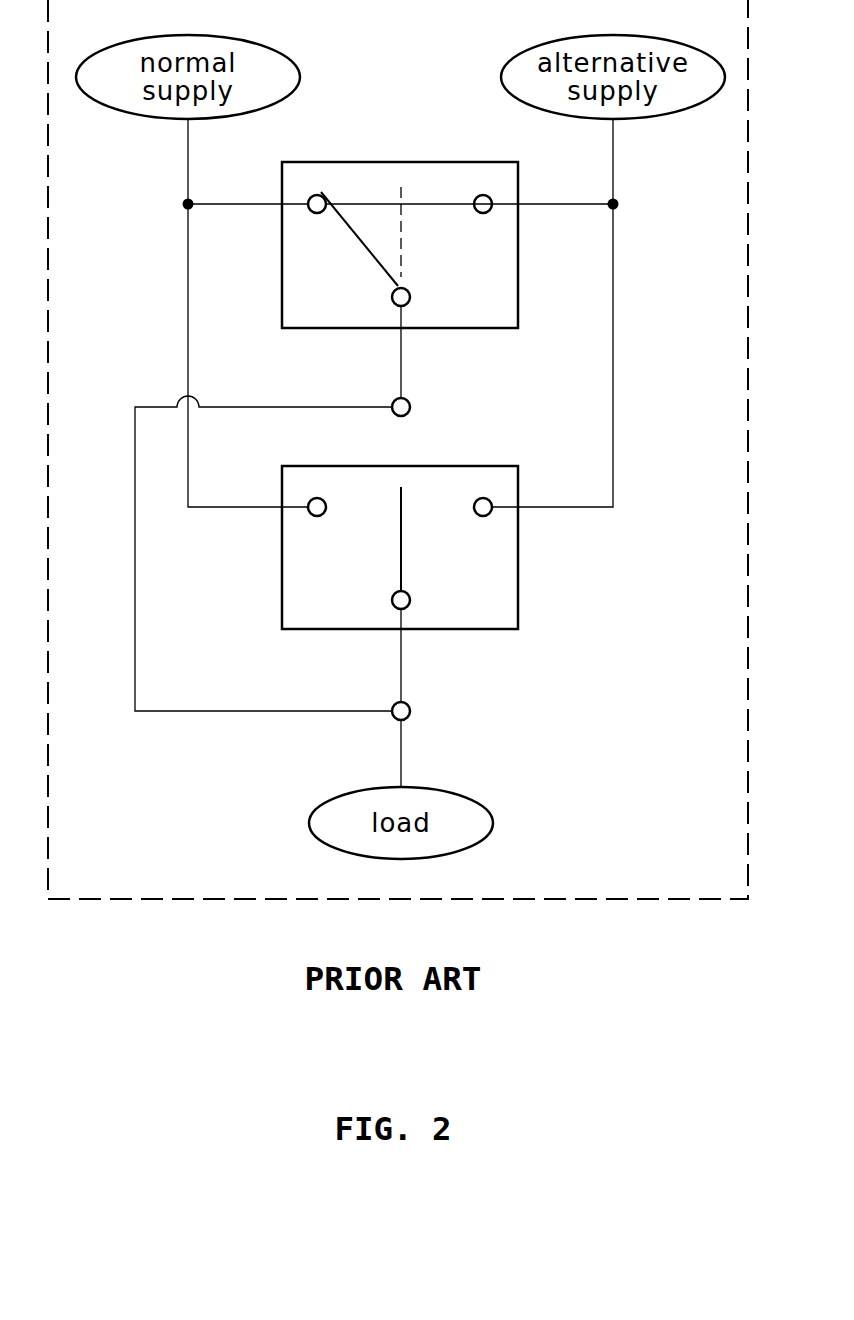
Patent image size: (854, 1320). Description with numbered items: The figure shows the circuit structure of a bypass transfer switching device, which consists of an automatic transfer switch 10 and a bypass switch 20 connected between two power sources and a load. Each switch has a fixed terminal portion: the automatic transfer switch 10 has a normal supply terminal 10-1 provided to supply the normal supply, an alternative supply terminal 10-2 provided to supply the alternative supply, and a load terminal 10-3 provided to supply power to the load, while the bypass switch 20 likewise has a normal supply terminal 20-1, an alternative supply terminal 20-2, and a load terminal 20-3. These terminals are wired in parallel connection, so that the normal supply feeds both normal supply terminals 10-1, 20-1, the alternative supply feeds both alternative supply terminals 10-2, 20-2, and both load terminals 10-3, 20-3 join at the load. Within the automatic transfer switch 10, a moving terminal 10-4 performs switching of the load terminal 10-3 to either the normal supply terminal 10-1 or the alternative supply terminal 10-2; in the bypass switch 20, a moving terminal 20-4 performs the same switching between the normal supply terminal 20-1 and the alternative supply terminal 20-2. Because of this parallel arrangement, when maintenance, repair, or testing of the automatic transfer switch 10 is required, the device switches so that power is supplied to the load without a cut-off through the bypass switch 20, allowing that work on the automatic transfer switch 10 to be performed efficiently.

The automatic transfer switch 10 is at (519, 270).
The normal supply terminal 10-1 is at (314, 195).
The alternative supply terminal 10-2 is at (482, 195).
The load terminal 10-3 is at (397, 307).
The moving terminal 10-4 is at (358, 238).
The bypass switch 20 is at (519, 590).
The normal supply terminal 20-1 is at (315, 497).
The alternative supply terminal 20-2 is at (482, 497).
The load terminal 20-3 is at (397, 610).
The moving terminal 20-4 is at (400, 560).